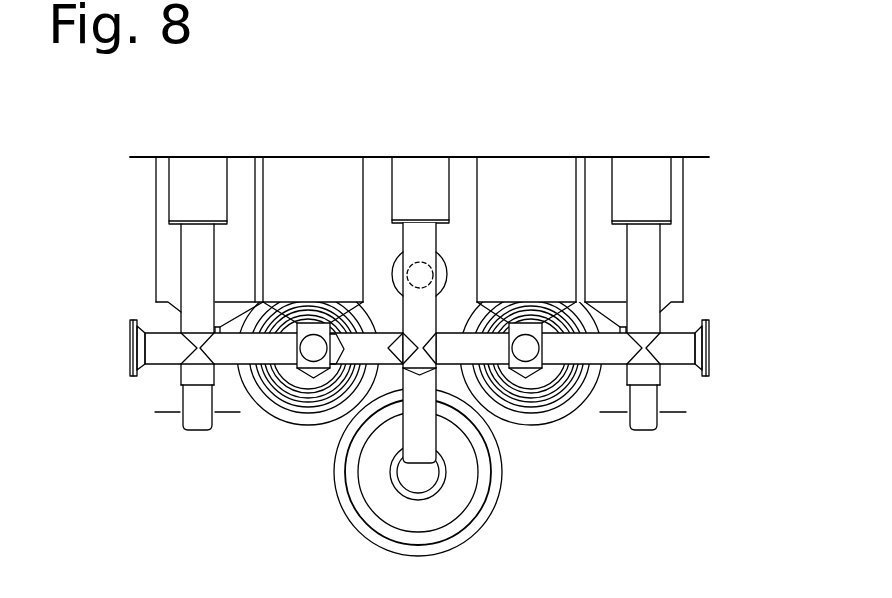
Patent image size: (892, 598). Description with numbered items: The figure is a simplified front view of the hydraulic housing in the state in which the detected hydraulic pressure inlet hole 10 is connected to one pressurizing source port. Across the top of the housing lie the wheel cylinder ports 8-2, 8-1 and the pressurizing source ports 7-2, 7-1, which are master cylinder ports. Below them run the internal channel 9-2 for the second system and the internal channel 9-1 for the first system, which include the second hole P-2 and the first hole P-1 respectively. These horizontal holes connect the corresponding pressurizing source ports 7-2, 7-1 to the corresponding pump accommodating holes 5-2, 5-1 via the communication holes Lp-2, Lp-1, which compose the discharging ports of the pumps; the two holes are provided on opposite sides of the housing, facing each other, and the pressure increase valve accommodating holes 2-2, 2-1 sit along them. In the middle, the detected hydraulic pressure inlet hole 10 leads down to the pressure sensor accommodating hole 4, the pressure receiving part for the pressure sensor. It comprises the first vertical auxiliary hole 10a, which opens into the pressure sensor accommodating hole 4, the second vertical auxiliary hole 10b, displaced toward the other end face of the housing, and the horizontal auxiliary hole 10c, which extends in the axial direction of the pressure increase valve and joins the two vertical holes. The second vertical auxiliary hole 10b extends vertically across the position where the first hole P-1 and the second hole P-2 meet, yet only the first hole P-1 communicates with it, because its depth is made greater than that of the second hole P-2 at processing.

The wheel cylinder port 8-2 is at (163, 167).
The wheel cylinder port 8-1 is at (678, 163).
The pressurizing source port 7-2 is at (303, 170).
The pressurizing source port 7-1 is at (537, 180).
The detected hydraulic pressure inlet hole 10 is at (411, 251).
The first vertical auxiliary hole 10a is at (422, 400).
The second vertical auxiliary hole 10b is at (410, 243).
The horizontal auxiliary hole 10c is at (424, 262).
The internal channel for a second system 9-2 is at (152, 322).
The internal channel for a first system 9-1 is at (690, 322).
The communication hole Lp-2 is at (195, 376).
The communication hole Lp-1 is at (650, 402).
The pump accommodating hole 5-2 is at (177, 420).
The pump accommodating hole 5-1 is at (668, 427).
The second hole P-2 is at (261, 357).
The first hole P-1 is at (571, 350).
The pressure increase valve accommodating hole 2-2 is at (303, 385).
The pressure increase valve accommodating hole 2-1 is at (525, 383).
The pressure sensor accommodating hole 4 is at (450, 507).